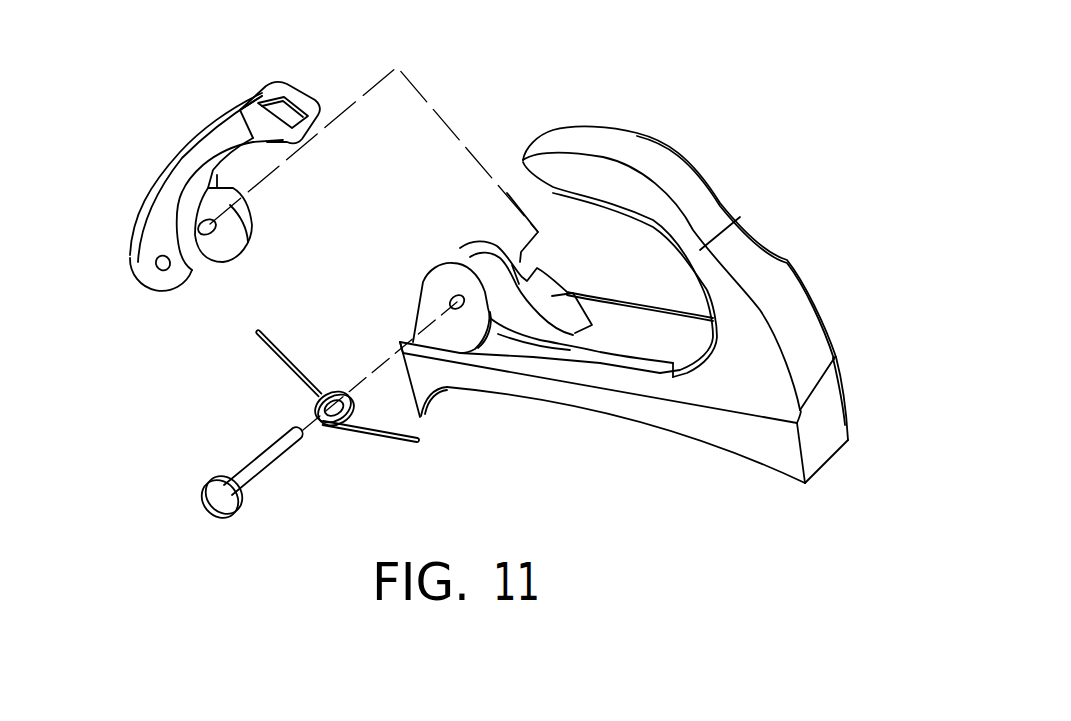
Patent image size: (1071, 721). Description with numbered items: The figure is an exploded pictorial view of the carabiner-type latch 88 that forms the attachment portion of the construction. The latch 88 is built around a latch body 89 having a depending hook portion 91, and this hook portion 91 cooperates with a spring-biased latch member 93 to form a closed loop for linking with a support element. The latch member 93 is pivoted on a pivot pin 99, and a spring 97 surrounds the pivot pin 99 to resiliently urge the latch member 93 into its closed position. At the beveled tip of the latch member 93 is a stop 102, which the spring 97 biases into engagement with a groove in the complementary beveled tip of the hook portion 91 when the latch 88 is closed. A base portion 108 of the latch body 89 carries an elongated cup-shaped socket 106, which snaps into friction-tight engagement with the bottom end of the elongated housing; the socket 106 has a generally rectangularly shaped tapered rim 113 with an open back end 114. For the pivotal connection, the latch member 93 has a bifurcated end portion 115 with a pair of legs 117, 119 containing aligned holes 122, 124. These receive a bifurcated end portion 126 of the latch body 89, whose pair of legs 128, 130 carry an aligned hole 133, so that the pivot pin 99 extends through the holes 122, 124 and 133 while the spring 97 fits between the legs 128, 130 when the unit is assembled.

The latch 88 is at (495, 465).
The latch body 89 is at (833, 313).
The hook portion 91 is at (717, 153).
The latch member 93 is at (169, 143).
The spring 97 is at (260, 313).
The pivot pin 99 is at (257, 427).
The stop 102 is at (299, 90).
The elongated cup-shaped socket 106 is at (433, 367).
The base portion 108 is at (830, 383).
The tapered rim 113 is at (823, 427).
The open back end 114 is at (757, 417).
The bifurcated end portion 115 is at (170, 273).
The leg 117 is at (207, 264).
The leg 119 is at (232, 217).
The hole 122 is at (160, 233).
The hole 124 is at (213, 187).
The bifurcated end portion 126 is at (414, 262).
The leg 128 is at (438, 266).
The leg 130 is at (490, 213).
The hole 133 is at (453, 262).